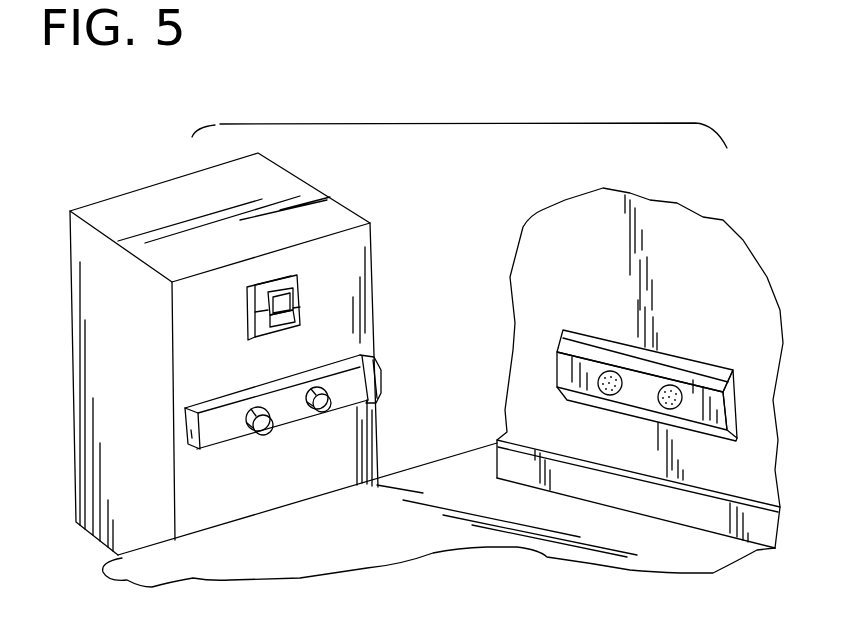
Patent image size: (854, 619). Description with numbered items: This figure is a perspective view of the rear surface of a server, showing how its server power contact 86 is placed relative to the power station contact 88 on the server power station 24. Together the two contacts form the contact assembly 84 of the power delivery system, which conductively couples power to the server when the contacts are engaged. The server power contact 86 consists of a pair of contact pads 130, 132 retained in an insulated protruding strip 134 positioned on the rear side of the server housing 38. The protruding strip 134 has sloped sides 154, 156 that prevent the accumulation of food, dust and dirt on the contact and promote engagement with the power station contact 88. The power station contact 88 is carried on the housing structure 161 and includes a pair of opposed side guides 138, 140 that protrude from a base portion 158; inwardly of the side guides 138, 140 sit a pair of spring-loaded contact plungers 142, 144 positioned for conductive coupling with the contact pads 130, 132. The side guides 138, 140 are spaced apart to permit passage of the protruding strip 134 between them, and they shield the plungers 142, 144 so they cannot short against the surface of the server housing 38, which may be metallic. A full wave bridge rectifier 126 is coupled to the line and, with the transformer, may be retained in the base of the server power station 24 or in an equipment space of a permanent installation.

The server power station 24 is at (504, 514).
The server housing 38 is at (658, 218).
The contact assembly 84 is at (437, 222).
The server power contact 86 is at (745, 327).
The power station contact 88 is at (242, 380).
The full wave bridge rectifier 126 is at (297, 292).
The contact pad 130 is at (607, 386).
The contact pad 132 is at (664, 390).
The insulated protruding strip 134 is at (735, 416).
The side guide 138 is at (198, 447).
The side guide 140 is at (378, 388).
The spring-loaded contact plunger 142 is at (260, 438).
The spring-loaded contact plunger 144 is at (323, 413).
The sloped side 154 is at (580, 338).
The sloped side 156 is at (700, 433).
The base portion 158 is at (343, 378).
The housing structure 161 is at (113, 270).